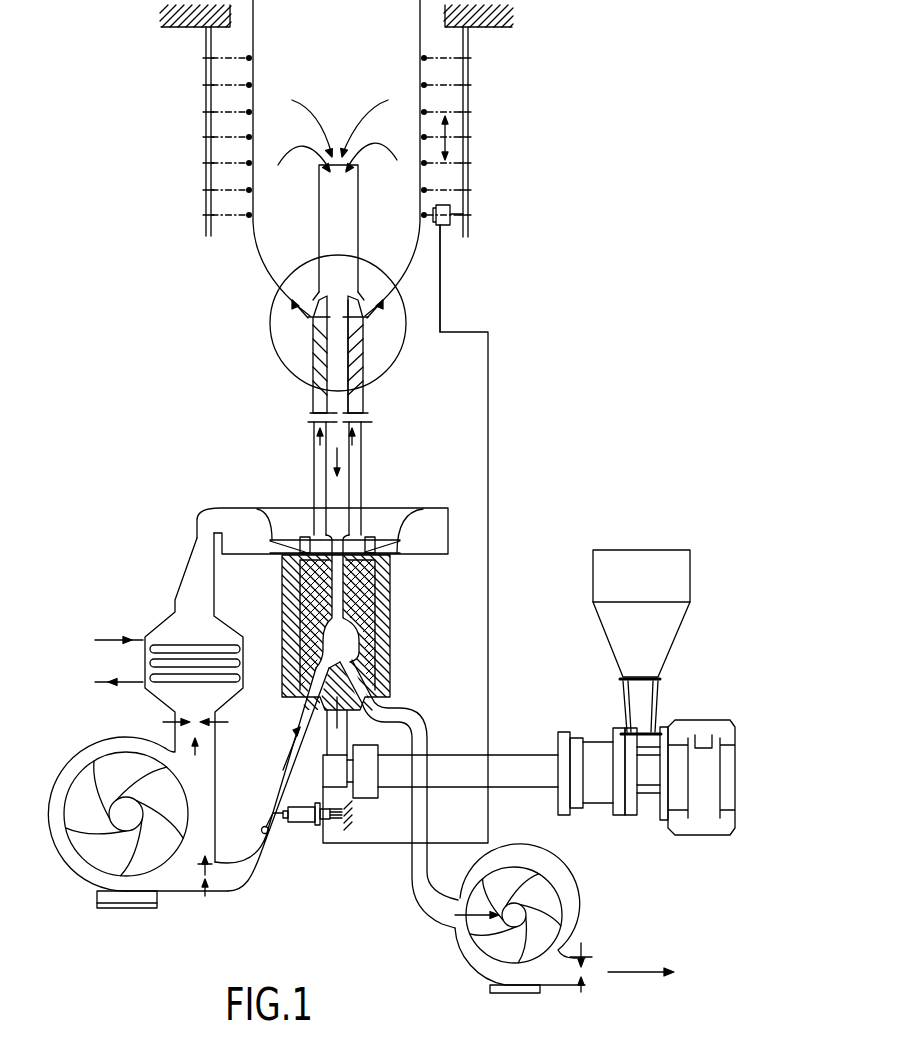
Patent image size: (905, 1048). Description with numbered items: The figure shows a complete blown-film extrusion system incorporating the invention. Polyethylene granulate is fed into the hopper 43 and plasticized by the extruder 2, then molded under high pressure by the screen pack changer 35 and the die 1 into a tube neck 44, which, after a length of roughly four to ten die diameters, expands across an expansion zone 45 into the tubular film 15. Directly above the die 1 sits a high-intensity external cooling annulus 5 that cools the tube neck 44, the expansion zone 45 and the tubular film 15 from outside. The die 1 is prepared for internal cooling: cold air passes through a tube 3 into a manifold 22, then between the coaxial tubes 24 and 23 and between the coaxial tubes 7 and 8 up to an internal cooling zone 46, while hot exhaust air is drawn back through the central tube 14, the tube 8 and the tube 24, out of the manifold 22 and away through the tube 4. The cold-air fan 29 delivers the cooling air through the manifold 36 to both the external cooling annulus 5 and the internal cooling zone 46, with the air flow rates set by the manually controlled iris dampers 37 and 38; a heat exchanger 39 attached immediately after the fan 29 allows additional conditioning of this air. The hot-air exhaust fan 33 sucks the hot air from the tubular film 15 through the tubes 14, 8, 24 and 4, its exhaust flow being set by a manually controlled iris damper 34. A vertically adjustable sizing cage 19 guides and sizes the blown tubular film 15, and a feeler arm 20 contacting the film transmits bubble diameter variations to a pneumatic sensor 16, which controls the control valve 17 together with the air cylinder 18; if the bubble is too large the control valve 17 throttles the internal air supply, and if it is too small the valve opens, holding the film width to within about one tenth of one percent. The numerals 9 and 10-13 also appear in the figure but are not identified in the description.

The die 1 is at (388, 630).
The extruder 2 is at (510, 757).
The tube 3 is at (298, 724).
The tube 4 is at (397, 712).
The external cooling annulus 5 is at (427, 518).
The coaxial tube 7 is at (363, 397).
The tube 8 is at (349, 448).
The annular channel 9 is at (362, 337).
The nozzle orifices 10-13 is at (362, 310).
The central tube 14 is at (319, 225).
The tubular film 15 is at (250, 172).
The pneumatic sensor 16 is at (453, 218).
The control valve 17 is at (268, 834).
The air cylinder 18 is at (300, 825).
The sizing cage 19 is at (468, 177).
The feeler arm 20 is at (442, 230).
The manifold 22 is at (318, 658).
The coaxial tube 23 is at (308, 538).
The tube 24 is at (333, 605).
The cold-air fan 29 is at (97, 850).
The hot-air exhaust fan 33 is at (481, 933).
The iris damper 34 is at (583, 945).
The screen pack changer 35 is at (337, 787).
The manifold 36 is at (175, 883).
The iris damper 37 is at (207, 896).
The iris damper 38 is at (172, 722).
The heat exchanger 39 is at (195, 647).
The hopper 43 is at (610, 557).
The tube neck 44 is at (313, 393).
The expansion zone 45 is at (278, 293).
The internal cooling zone 46 is at (300, 273).